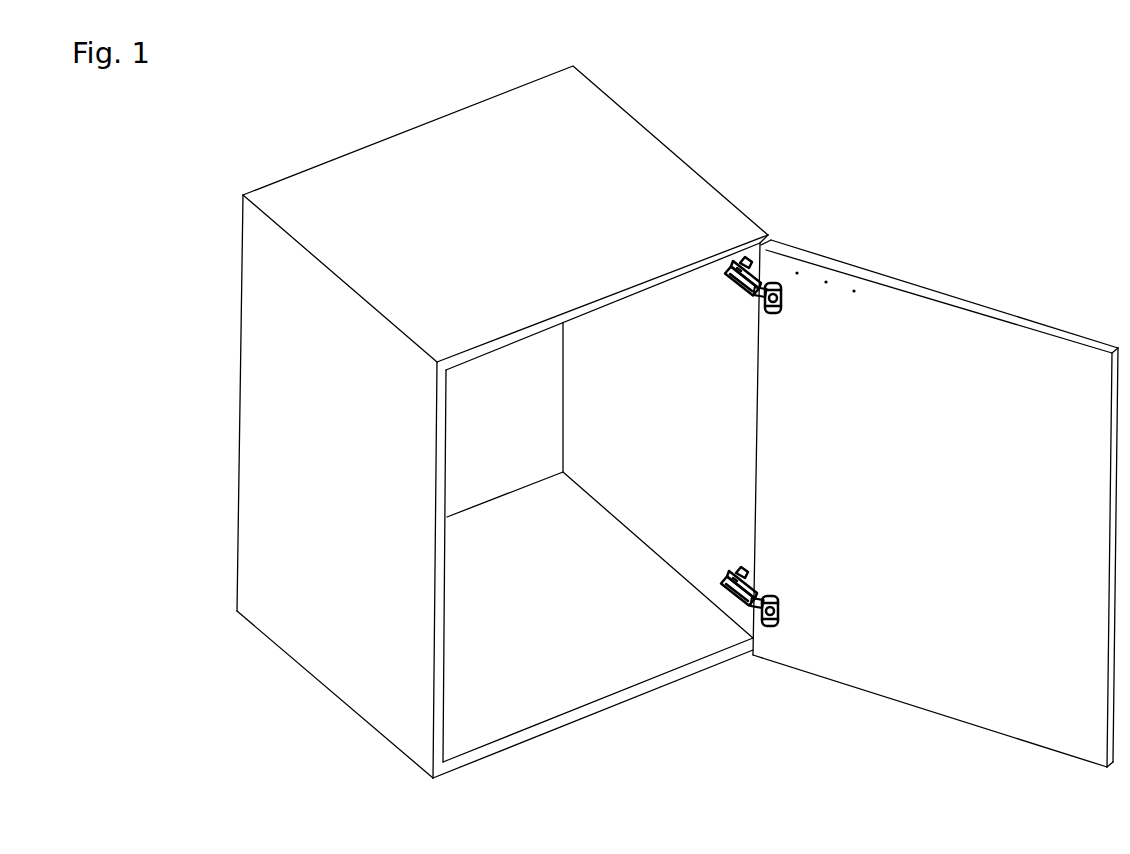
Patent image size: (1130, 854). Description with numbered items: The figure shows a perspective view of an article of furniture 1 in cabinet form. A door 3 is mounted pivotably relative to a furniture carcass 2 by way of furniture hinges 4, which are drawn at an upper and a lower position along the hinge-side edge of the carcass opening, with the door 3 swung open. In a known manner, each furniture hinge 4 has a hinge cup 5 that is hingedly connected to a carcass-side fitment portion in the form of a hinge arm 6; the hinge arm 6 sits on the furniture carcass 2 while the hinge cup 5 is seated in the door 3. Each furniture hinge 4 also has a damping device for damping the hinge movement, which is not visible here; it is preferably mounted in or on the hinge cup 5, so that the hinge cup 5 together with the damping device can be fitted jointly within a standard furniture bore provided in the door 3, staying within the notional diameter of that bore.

The article of furniture 1 is at (190, 687).
The furniture carcass 2 is at (331, 669).
The door 3 is at (930, 681).
The furniture hinge 4 is at (732, 317).
The hinge cup 5 is at (773, 316).
The hinge arm 6 is at (733, 283).